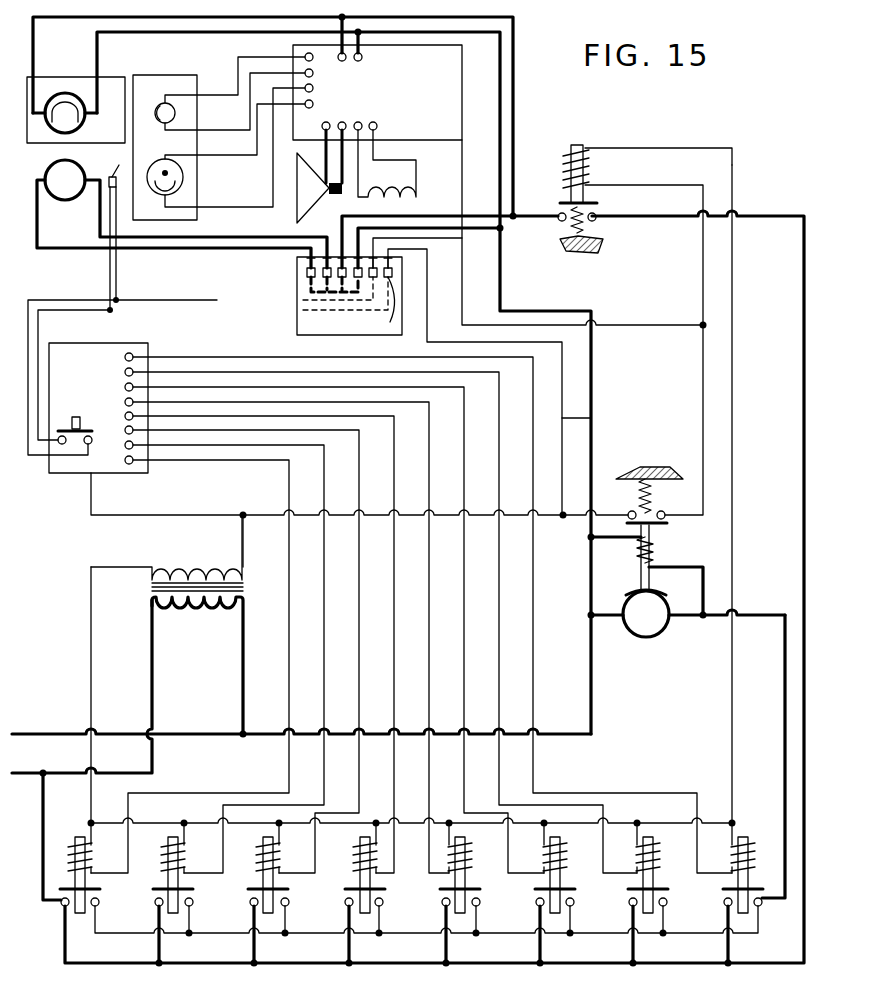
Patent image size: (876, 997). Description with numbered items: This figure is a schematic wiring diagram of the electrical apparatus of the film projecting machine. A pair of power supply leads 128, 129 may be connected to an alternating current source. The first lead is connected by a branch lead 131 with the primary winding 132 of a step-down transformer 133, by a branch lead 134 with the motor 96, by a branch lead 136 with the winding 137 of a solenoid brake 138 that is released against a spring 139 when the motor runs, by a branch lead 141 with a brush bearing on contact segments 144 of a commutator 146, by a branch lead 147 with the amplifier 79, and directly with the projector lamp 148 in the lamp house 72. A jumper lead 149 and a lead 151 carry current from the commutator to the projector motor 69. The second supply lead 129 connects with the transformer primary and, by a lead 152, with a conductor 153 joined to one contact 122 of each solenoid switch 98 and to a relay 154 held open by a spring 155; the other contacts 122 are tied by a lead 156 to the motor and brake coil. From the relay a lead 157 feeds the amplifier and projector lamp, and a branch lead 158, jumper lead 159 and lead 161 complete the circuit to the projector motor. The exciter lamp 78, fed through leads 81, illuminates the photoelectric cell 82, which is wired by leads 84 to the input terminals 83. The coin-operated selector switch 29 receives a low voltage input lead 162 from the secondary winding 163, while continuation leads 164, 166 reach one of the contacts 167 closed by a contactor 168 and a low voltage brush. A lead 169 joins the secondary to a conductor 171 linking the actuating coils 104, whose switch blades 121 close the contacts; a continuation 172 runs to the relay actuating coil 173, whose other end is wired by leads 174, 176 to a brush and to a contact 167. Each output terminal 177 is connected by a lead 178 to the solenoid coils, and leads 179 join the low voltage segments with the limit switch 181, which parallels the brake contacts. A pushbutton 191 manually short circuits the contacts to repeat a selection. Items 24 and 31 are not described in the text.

The loudspeaker 24 is at (318, 198).
The coin-operated selector switch 29 is at (64, 470).
The conductor 31 is at (35, 226).
The projector motor 69 is at (65, 200).
The lamp house 72 is at (108, 77).
The exciter lamp 78 is at (158, 105).
The amplifier 79 is at (437, 141).
The leads 81 is at (236, 60).
The photoelectric cell 82 is at (183, 180).
The input terminals 83 is at (313, 100).
The leads 84 is at (257, 160).
The motor 96 is at (670, 622).
The solenoid switch 98 is at (60, 859).
The actuating coil 104 is at (84, 866).
The switch blade 121 is at (289, 890).
The contacts 122 is at (62, 907).
The power supply lead 128 is at (152, 34).
The power supply lead 129 is at (58, 772).
The branch lead 131 is at (243, 686).
The primary winding 132 is at (220, 612).
The step-down transformer 133 is at (240, 588).
The branch lead 134 is at (605, 622).
The branch lead 136 is at (614, 541).
The winding 137 is at (660, 546).
The solenoid brake 138 is at (662, 576).
The spring 139 is at (654, 500).
The branch lead 141 is at (463, 210).
The contact segments 144 is at (351, 297).
The commutator 146 is at (297, 322).
The branch lead 147 is at (363, 58).
The projector lamp 148 is at (65, 92).
The jumper lead 149 is at (300, 291).
The lead 151 is at (168, 250).
The lead 152 is at (48, 800).
The conductor 153 is at (803, 356).
The relay 154 is at (562, 173).
The spring 155 is at (582, 232).
The lead 156 is at (785, 712).
The lead 157 is at (515, 100).
The branch lead 158 is at (470, 212).
The jumper lead 159 is at (300, 282).
The lead 161 is at (252, 240).
The low voltage input lead 162 is at (92, 494).
The secondary winding 163 is at (212, 560).
The continuation lead 164 is at (550, 520).
The continuation lead 166 is at (594, 418).
The contacts 167 is at (668, 523).
The contactor 168 is at (630, 511).
The lead 169 is at (91, 639).
The conductor 171 is at (178, 822).
The continuation 172 is at (735, 433).
The actuating coil 173 is at (592, 166).
The lead 174 is at (658, 325).
The lead 176 is at (703, 389).
The output terminals 177 is at (125, 416).
The lead 178 is at (244, 548).
The leads 179 is at (217, 301).
The limit switch 181 is at (106, 176).
The pushbutton 191 is at (75, 415).